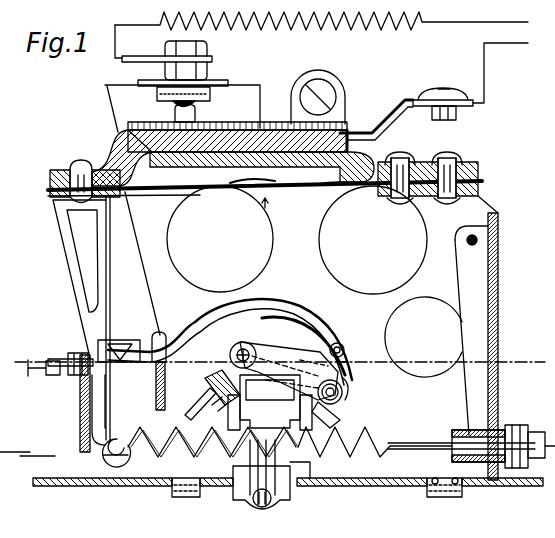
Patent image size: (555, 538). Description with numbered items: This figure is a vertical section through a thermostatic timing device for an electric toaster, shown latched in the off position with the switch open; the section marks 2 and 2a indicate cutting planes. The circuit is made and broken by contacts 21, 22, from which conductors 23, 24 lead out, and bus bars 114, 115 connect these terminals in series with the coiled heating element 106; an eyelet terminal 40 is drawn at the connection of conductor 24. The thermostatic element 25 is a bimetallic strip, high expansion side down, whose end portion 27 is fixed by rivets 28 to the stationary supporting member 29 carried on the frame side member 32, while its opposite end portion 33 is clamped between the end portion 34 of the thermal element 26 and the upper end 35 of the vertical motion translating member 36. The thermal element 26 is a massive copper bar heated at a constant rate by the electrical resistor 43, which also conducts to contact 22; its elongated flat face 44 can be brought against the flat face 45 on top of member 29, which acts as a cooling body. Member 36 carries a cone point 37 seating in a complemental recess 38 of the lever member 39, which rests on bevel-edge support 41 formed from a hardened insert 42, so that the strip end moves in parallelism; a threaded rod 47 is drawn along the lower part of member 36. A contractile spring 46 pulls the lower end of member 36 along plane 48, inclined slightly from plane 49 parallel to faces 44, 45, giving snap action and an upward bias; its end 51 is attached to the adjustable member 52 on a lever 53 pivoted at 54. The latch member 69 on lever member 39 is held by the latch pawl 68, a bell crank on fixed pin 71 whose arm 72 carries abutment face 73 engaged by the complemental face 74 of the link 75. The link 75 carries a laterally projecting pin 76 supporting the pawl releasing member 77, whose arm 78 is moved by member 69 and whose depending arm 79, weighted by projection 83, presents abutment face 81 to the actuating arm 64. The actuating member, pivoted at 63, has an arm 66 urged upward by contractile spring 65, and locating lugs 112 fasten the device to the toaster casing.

The section line 2 is at (275, 80).
The section line 2a is at (163, 299).
The coiled heating element 106 is at (321, 35).
The bus bar 114 is at (130, 62).
The conductor 23 is at (192, 42).
The make-and-break contact 21 is at (157, 101).
The make-and-break contact 22 is at (172, 118).
The electrical resistor 43 is at (232, 126).
The thermal element 26 is at (118, 163).
The end portion of thermal element 34 is at (55, 173).
The upper end of motion translating member 35 is at (60, 203).
The elongated flat face 44 is at (265, 183).
The flat face 45 is at (210, 193).
The eyelet terminal 40 is at (330, 122).
The conductor 24 is at (402, 98).
The bus bar 115 is at (470, 100).
The end portion of thermostatic strip 27 is at (377, 195).
The stationary supporting member 29 is at (386, 152).
The rivet 28 is at (437, 158).
The thermostatic element 25 is at (288, 192).
The frame side member 32 is at (462, 210).
The lever pivot 54 is at (467, 243).
The end portion of thermostatic strip 33 is at (110, 198).
The vertical motion translating member 36 is at (104, 285).
The complemental recess 38 is at (114, 352).
The bevel-edge support 41 is at (162, 333).
The latch member 69 is at (262, 296).
The pawl releasing member 77 is at (312, 328).
The link 75 is at (268, 346).
The laterally projecting pin 76 is at (238, 350).
The arm of pawl releasing member 78 is at (342, 342).
The abutment face 73 is at (305, 368).
The pawl arm 72 is at (356, 364).
The fixed supporting pin 71 is at (345, 400).
The latch pawl 68 is at (348, 384).
The pivot of actuating member 63 is at (315, 415).
The complemental abutment face 74 is at (270, 402).
The depending arm 79 is at (210, 383).
The projection 83 is at (205, 400).
The contractile spring 65 is at (225, 412).
The abutment face 81 is at (186, 433).
The end of spring 51 is at (415, 440).
The lever 53 is at (497, 387).
The adjustable member 52 is at (522, 425).
The cone point 37 is at (77, 380).
The plane 49 is at (36, 376).
The lever member 39 is at (152, 378).
The threaded rod 47 is at (95, 460).
The insert 42 is at (150, 395).
The plane 48 is at (60, 455).
The contractile spring 46 is at (138, 482).
The locating lug 112 is at (184, 497).
The arm of actuating member 66 is at (242, 500).
The actuating arm 64 is at (291, 480).